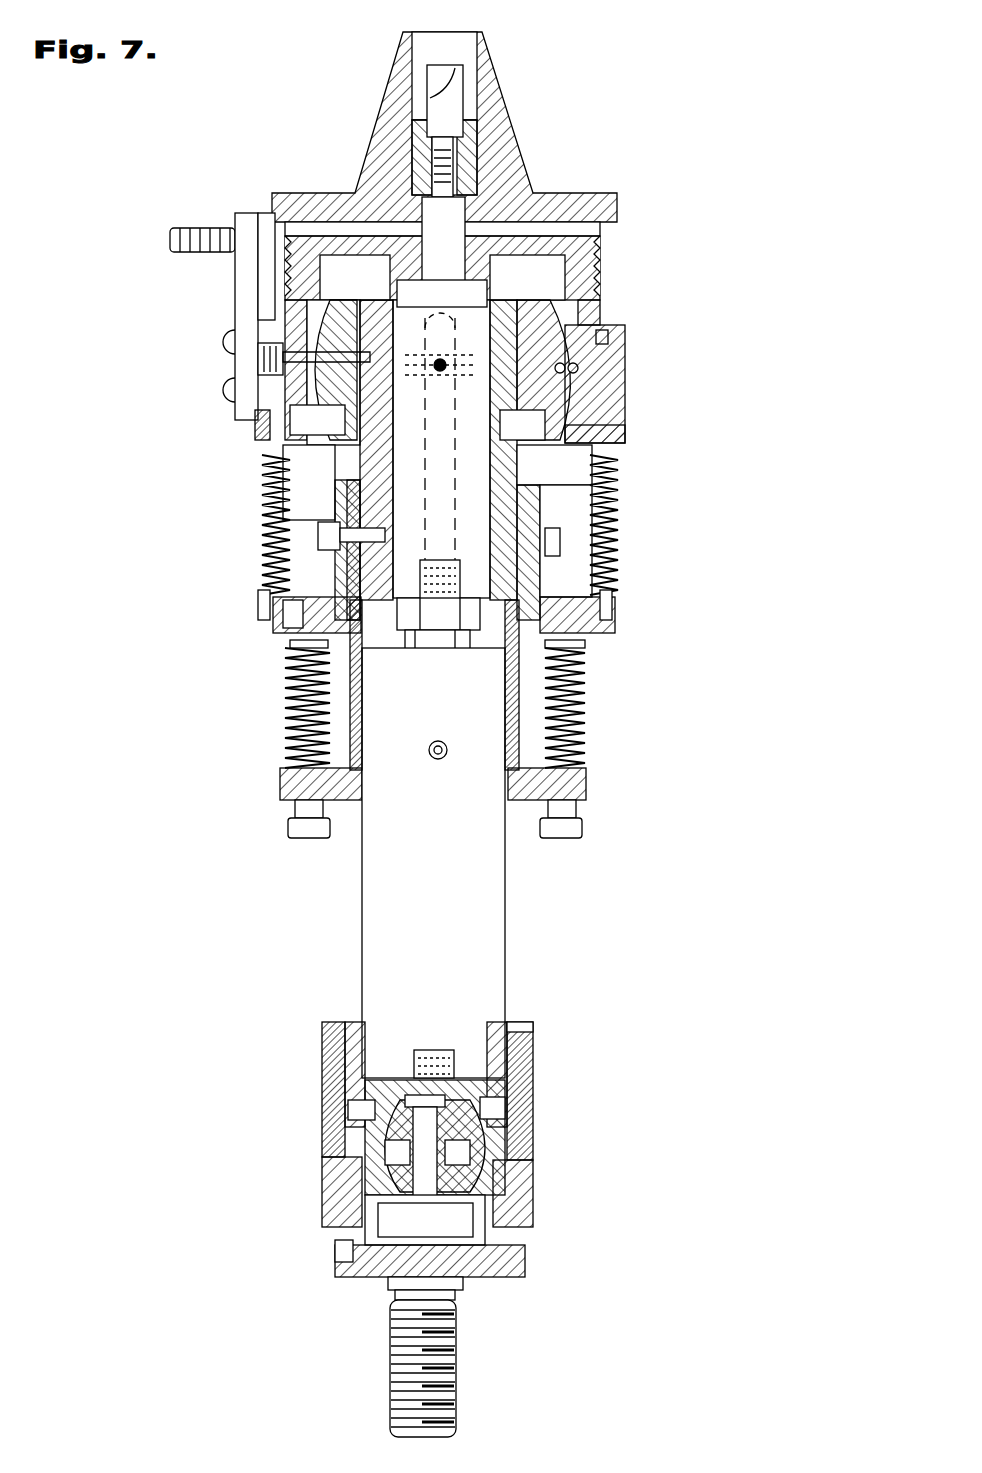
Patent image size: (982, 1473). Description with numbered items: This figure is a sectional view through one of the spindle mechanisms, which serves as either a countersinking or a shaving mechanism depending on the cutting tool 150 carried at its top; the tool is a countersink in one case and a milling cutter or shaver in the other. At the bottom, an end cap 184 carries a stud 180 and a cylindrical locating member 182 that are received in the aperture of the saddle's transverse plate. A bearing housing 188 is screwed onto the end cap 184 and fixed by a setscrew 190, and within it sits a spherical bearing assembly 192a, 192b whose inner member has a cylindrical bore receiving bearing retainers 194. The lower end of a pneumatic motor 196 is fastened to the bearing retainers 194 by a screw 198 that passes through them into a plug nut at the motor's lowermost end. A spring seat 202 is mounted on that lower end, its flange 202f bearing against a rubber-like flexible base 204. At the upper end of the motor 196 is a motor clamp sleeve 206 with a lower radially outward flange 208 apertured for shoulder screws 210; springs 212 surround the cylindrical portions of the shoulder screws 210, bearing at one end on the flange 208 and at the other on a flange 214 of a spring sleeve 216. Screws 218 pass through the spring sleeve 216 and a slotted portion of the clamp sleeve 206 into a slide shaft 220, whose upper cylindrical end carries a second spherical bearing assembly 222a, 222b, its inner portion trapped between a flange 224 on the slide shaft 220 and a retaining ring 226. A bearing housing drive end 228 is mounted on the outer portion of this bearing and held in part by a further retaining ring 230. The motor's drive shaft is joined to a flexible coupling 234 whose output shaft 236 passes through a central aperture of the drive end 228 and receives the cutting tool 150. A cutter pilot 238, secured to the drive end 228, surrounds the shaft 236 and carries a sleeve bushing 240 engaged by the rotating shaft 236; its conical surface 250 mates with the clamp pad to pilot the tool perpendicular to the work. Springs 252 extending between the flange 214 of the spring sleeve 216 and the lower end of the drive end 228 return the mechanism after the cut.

The cutting tool 150 is at (452, 95).
The stud 180 is at (456, 1380).
The cylindrical locating member 182 is at (463, 1288).
The end cap 184 is at (518, 1272).
The bearing housing 188 is at (530, 1198).
The setscrew 190 is at (322, 1204).
The spherical bearing assembly 192a is at (530, 1133).
The spherical bearing assembly 192b is at (498, 1183).
The bearing retainers 194 is at (484, 1078).
The pneumatic motor 196 is at (507, 917).
The screw 198 is at (485, 1245).
The spring seat 202 is at (509, 1024).
The flange 202f is at (533, 1036).
The flexible base 204 is at (322, 1084).
The motor clamp sleeve 206 is at (514, 694).
The flange 208 is at (586, 794).
The shoulder screws 210 is at (582, 840).
The springs 212 is at (585, 717).
The flange 214 is at (615, 625).
The spring sleeve 216 is at (536, 549).
The screws 218 is at (312, 540).
The slide shaft 220 is at (362, 473).
The spherical bearing assembly 222a is at (585, 318).
The spherical bearing assembly 222b is at (600, 342).
The flange 224 is at (551, 284).
The retaining ring 226 is at (523, 452).
The bearing housing drive end 228 is at (612, 385).
The retaining ring 230 is at (600, 439).
The flexible coupling 234 is at (385, 284).
The shaft 236 is at (466, 265).
The cutter pilot 238 is at (505, 115).
The sleeve bushing 240 is at (470, 166).
The conical surface 250 is at (384, 105).
The springs 252 is at (262, 466).